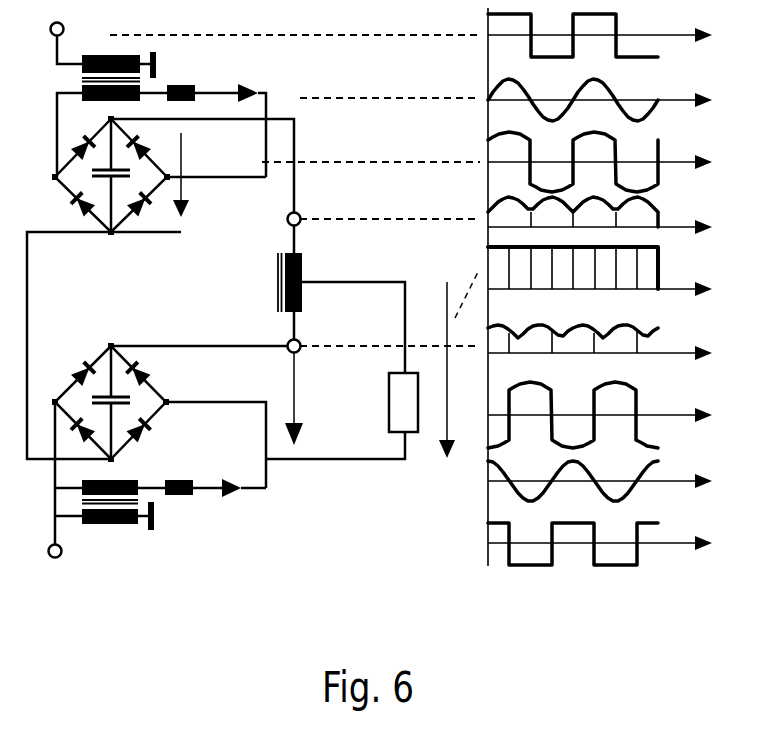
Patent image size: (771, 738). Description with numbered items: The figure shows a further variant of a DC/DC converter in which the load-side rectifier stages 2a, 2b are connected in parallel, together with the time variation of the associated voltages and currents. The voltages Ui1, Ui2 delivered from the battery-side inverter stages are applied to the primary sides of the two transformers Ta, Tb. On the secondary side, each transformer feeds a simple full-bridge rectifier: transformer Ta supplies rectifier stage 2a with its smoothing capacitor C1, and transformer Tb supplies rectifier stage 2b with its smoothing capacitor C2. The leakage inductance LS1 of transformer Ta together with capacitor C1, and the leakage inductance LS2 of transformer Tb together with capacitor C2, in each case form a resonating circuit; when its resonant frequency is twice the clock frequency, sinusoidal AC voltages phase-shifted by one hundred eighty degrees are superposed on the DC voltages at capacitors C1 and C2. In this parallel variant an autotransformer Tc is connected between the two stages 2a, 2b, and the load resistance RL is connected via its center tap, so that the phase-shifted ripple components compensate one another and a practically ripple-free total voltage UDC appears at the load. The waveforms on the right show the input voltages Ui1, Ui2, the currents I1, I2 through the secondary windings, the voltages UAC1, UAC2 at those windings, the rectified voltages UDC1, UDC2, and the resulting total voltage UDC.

The rectifier stage 2a is at (92, 175).
The rectifier stage 2b is at (109, 397).
The smoothing capacitor C1 is at (115, 182).
The smoothing capacitor C2 is at (117, 387).
The transformer Ta is at (84, 76).
The transformer Tb is at (84, 505).
The autotransformer Tc is at (318, 300).
The leakage inductance LS1 is at (190, 79).
The leakage inductance LS2 is at (180, 506).
The load resistance RL is at (342, 416).
The voltage Ui1 is at (77, 40).
The voltage Ui2 is at (75, 541).
The current I1 is at (265, 130).
The current I2 is at (244, 505).
The voltage UAC1 is at (295, 165).
The voltage UAC2 is at (216, 431).
The rectified voltage UDC1 is at (326, 181).
The rectified voltage UDC2 is at (315, 399).
The total voltage UDC is at (453, 365).